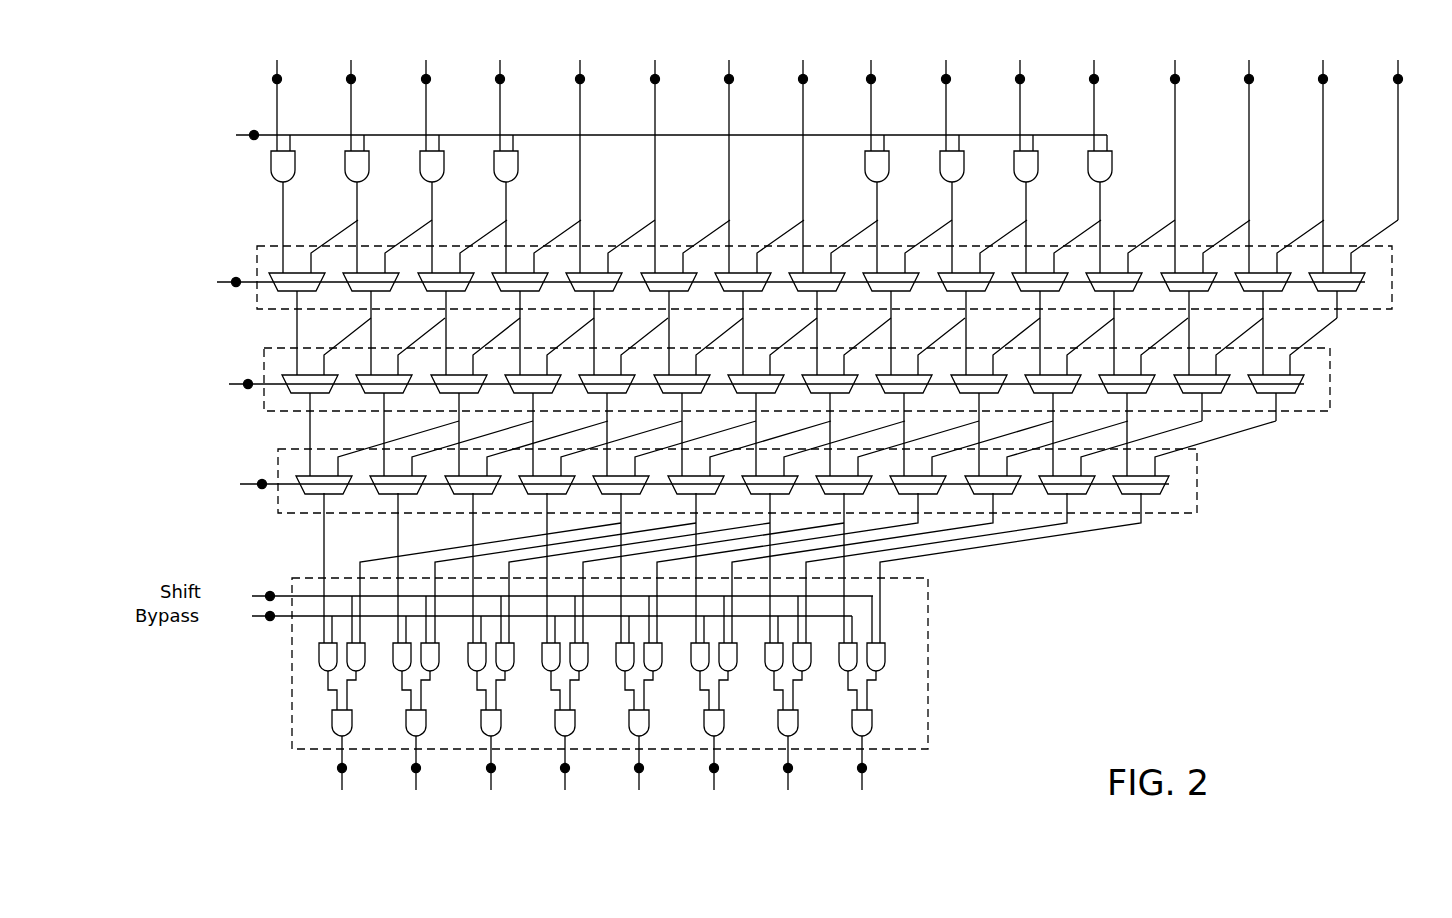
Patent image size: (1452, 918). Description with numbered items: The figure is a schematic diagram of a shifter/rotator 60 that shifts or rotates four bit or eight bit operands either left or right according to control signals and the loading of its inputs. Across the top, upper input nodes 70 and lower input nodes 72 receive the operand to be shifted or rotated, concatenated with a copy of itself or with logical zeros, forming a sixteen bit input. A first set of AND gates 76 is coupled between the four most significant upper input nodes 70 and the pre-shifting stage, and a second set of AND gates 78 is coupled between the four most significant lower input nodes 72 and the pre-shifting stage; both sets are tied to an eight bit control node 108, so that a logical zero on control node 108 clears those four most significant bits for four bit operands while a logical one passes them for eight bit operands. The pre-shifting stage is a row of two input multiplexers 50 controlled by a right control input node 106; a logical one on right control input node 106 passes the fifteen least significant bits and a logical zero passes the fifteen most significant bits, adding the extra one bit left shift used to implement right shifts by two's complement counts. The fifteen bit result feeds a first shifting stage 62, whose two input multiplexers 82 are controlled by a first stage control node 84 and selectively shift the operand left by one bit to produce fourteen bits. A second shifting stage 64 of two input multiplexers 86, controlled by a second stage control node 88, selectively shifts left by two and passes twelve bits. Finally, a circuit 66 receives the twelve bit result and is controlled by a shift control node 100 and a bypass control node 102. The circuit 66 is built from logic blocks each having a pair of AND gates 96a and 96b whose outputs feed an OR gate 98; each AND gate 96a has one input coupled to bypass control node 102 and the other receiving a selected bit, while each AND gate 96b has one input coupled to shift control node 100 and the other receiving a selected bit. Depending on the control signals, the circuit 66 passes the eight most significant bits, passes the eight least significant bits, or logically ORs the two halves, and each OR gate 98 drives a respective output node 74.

The upper input nodes 70 is at (816, 68).
The lower input nodes 72 is at (1411, 68).
The eight bit control node 108 is at (248, 139).
The first set of AND gates 76 is at (526, 178).
The second set of AND gates 78 is at (1120, 178).
The right control input node 106 is at (232, 284).
The two input multiplexers 50 is at (1362, 302).
The shifter/rotator 60 is at (1280, 683).
The first stage control node 84 is at (241, 384).
The two input multiplexers 82 is at (1300, 401).
The first shifting stage 62 is at (1331, 378).
The second stage control node 88 is at (254, 482).
The two input multiplexers 86 is at (1164, 503).
The second shifting stage 64 is at (1198, 480).
The shift control node 100 is at (264, 590).
The bypass control node 102 is at (264, 617).
The AND gate 96a is at (844, 672).
The AND gate 96b is at (885, 722).
The OR gate 98 is at (875, 741).
The circuit 66 is at (929, 660).
The output nodes 74 is at (879, 789).